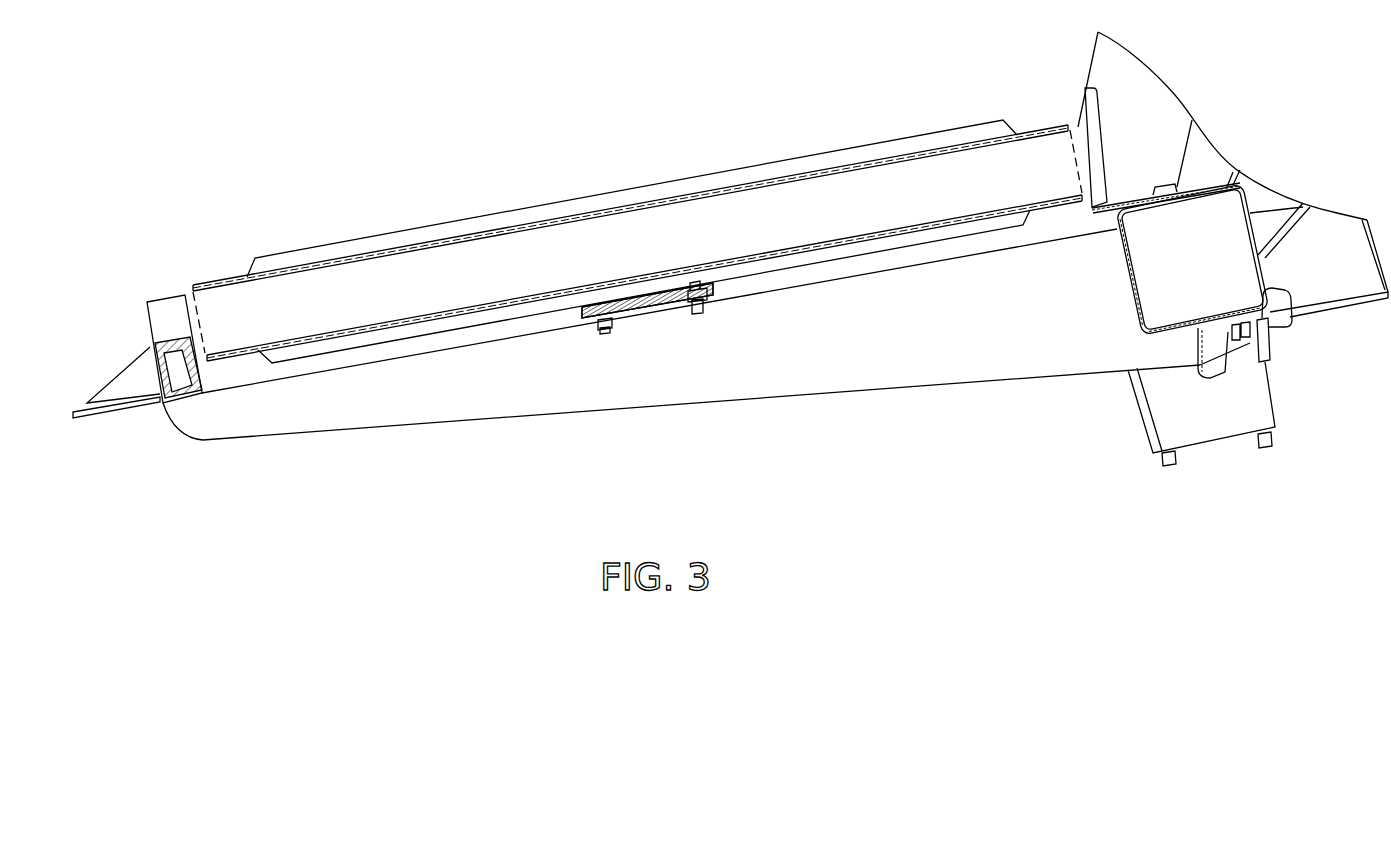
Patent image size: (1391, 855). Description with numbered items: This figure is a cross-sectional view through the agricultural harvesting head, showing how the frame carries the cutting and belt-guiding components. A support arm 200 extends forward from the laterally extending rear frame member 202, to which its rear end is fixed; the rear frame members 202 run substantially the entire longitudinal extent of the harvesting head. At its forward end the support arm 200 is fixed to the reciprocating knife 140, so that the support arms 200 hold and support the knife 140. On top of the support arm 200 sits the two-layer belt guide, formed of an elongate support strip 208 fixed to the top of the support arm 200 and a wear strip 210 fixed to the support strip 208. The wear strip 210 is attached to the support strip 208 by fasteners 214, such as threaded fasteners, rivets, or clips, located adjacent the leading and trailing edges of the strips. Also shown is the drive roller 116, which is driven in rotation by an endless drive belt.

The drive roller 116 is at (888, 152).
The reciprocating knife 140 is at (125, 365).
The support arms 200 is at (468, 385).
The rear frame members 202 is at (1177, 263).
The support strip 208 is at (652, 317).
The wear strip 210 is at (645, 297).
The fasteners 214 is at (605, 330).